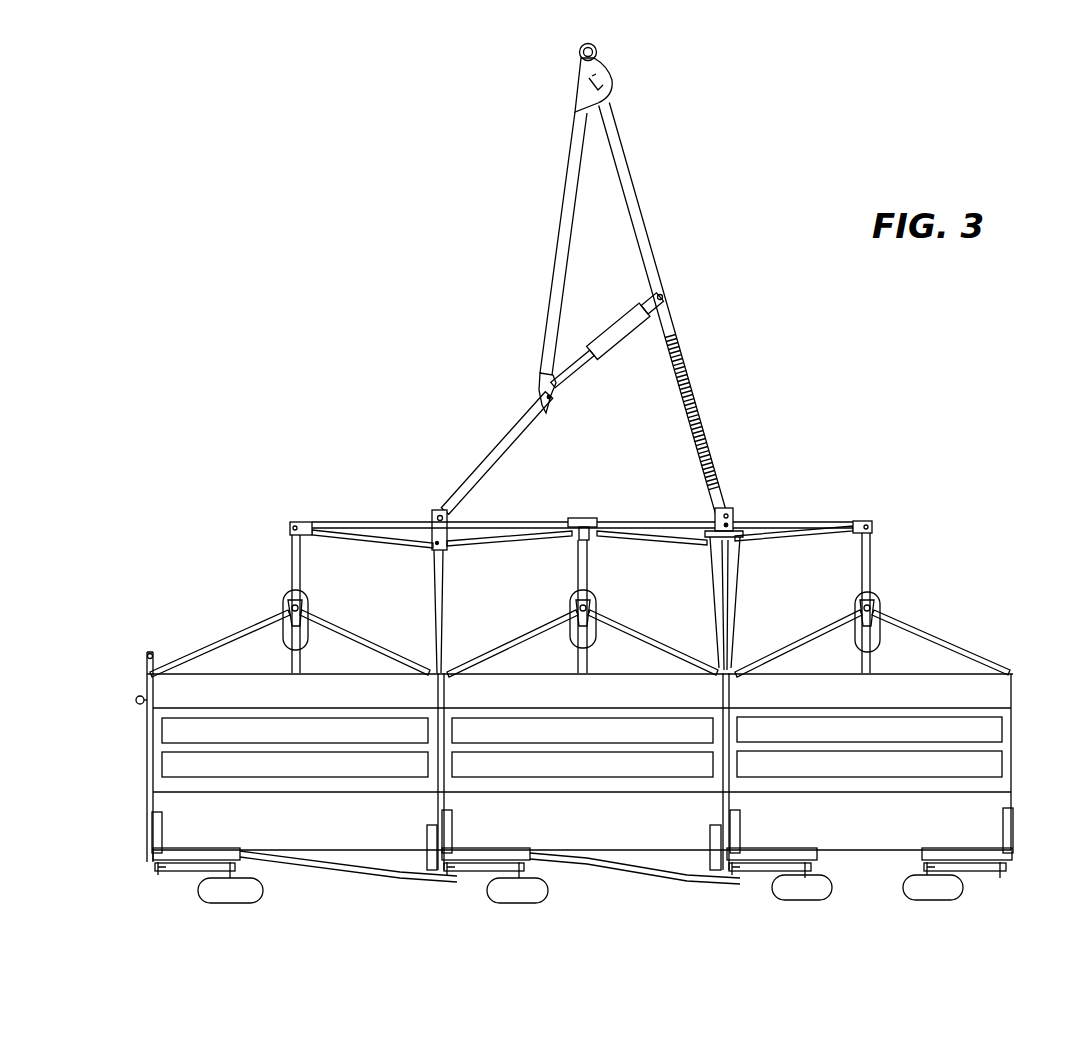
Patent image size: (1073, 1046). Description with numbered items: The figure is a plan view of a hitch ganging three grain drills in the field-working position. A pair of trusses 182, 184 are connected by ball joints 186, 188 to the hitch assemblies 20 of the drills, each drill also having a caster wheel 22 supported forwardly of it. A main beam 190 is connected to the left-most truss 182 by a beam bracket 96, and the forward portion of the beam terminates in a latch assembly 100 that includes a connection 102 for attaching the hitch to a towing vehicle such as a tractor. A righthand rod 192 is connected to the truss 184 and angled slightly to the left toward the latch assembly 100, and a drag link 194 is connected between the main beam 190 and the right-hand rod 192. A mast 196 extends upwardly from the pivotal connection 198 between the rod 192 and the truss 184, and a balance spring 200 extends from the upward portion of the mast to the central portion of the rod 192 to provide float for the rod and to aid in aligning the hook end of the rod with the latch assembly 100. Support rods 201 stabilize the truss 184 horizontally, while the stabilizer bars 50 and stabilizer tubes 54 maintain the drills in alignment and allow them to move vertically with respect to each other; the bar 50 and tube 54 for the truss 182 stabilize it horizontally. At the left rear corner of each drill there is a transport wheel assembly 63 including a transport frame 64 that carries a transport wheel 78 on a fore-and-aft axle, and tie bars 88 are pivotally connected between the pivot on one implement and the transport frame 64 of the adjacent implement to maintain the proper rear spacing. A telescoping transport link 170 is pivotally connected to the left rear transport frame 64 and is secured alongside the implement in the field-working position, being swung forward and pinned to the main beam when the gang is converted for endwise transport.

The latch assembly 100 is at (618, 75).
The connection 102 is at (578, 56).
The main beam 190 is at (552, 258).
The righthand rod 192 is at (682, 312).
The drag link 194 is at (636, 340).
The balance spring 200 is at (704, 415).
The beam bracket 96 is at (437, 508).
The truss 182 is at (380, 520).
The truss 184 is at (684, 520).
The ball joint 186 is at (297, 520).
The ball joint 188 is at (598, 492).
The mast 196 is at (738, 528).
The pivotal connection 198 is at (728, 517).
The hitch assembly 20 is at (300, 568).
The caster wheel 22 is at (283, 604).
The stabilizer tube 54 is at (435, 600).
The stabilizer bar 50 is at (465, 607).
The support rods 201 is at (745, 576).
The transport link 170 is at (145, 750).
The transport frame 64 is at (206, 850).
The tie bars 88 is at (383, 878).
The transport wheel assembly 63 is at (251, 904).
The transport wheel 78 is at (548, 890).